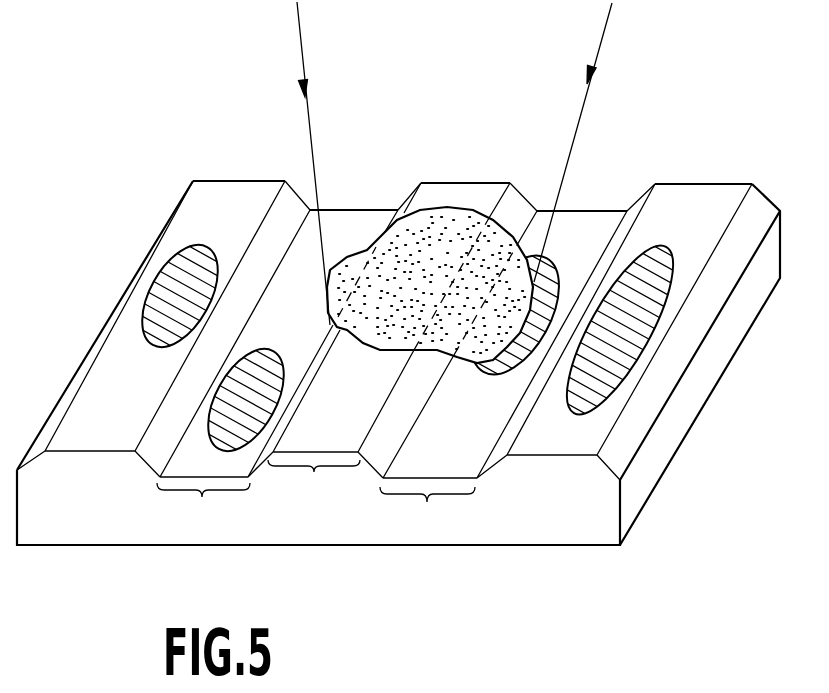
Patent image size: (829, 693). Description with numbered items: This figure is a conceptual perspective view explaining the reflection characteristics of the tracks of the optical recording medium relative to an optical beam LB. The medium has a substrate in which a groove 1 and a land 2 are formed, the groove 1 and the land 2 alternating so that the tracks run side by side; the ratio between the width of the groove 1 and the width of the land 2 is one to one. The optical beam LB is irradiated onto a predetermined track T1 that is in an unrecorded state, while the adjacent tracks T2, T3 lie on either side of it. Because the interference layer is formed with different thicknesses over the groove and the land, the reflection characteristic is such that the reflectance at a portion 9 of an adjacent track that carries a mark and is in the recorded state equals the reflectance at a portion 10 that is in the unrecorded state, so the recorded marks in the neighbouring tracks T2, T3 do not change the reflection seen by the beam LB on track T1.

The groove 1 is at (477, 197).
The land 2 is at (343, 216).
The portion of adjacent track formed with a mark 9 is at (221, 395).
The portion in an unrecorded state 10 is at (127, 420).
The optical beam LB is at (597, 45).
The predetermined track T1 is at (314, 494).
The adjacent track T2 is at (202, 497).
The adjacent track T3 is at (427, 503).